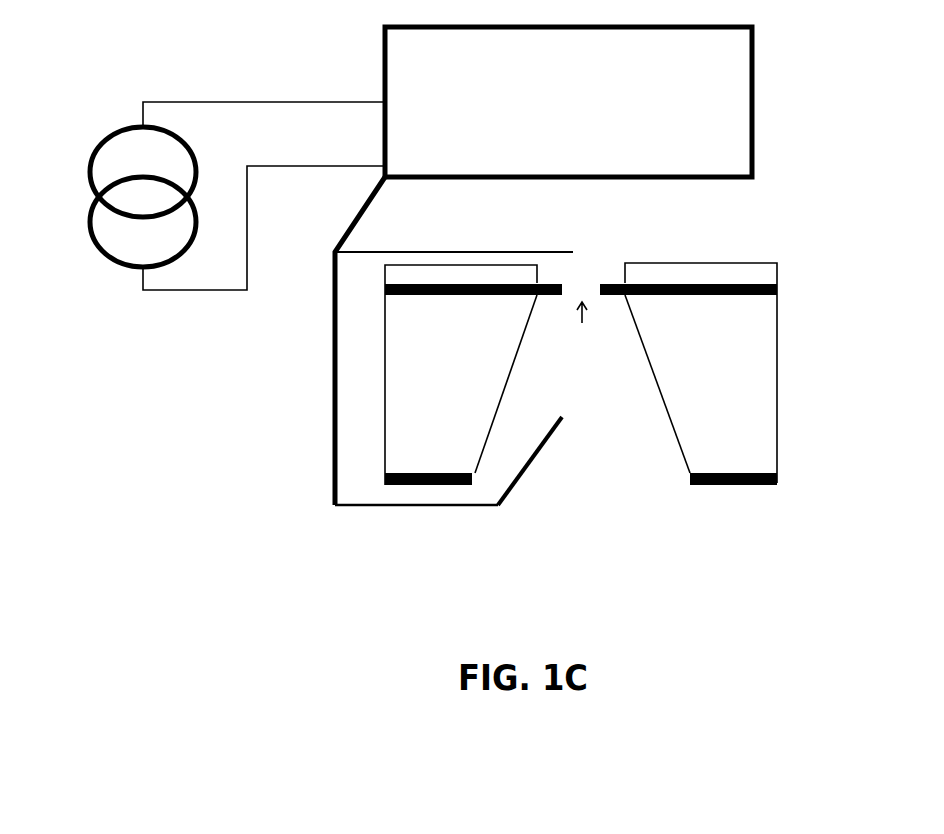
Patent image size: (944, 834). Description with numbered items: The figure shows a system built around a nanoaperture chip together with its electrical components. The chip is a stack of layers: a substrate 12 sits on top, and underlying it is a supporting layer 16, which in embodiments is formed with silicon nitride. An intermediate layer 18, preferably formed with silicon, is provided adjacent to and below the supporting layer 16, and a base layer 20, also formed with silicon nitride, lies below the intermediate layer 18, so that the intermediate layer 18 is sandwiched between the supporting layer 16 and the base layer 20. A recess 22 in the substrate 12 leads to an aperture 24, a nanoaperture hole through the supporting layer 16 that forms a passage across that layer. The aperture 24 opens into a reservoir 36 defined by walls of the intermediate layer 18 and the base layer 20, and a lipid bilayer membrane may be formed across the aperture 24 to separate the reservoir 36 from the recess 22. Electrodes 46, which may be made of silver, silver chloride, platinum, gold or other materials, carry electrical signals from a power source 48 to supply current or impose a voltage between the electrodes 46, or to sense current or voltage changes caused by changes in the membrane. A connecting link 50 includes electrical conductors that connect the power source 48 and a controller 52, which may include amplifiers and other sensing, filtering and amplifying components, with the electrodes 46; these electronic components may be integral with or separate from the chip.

The substrate 12 is at (767, 273).
The supporting layer 16 is at (777, 289).
The intermediate layer 18 is at (763, 345).
The base layer 20 is at (777, 478).
The recess 22 is at (585, 268).
The aperture 24 is at (580, 331).
The reservoir 36 is at (558, 461).
The electrodes 46 is at (448, 252).
The power source 48 is at (97, 240).
The connecting link 50 is at (352, 214).
The controller 52 is at (568, 102).